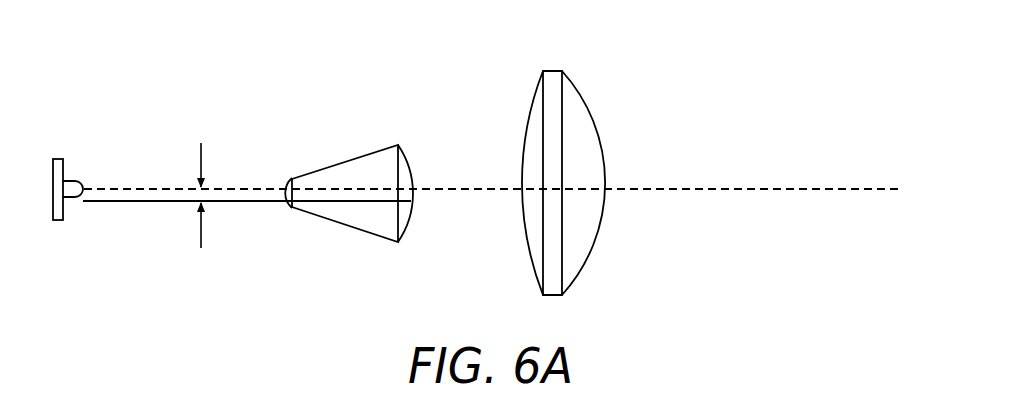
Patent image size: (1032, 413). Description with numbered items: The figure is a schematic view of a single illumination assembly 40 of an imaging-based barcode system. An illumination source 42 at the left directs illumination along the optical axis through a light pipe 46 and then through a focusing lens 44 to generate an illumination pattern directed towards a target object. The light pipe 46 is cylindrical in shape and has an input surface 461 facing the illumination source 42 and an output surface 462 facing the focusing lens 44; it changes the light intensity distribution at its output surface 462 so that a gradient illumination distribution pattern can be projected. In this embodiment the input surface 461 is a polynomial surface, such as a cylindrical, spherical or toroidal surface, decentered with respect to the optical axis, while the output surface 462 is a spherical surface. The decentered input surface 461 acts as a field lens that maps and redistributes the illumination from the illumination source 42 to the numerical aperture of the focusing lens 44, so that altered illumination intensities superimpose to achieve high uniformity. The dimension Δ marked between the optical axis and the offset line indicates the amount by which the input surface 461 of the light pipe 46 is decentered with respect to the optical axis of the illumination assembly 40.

The illumination assembly 40 is at (118, 88).
The illumination source 42 is at (66, 198).
The focusing lens 44 is at (552, 70).
The light pipe 46 is at (345, 158).
The input surface 461 is at (290, 186).
The output surface 462 is at (413, 169).